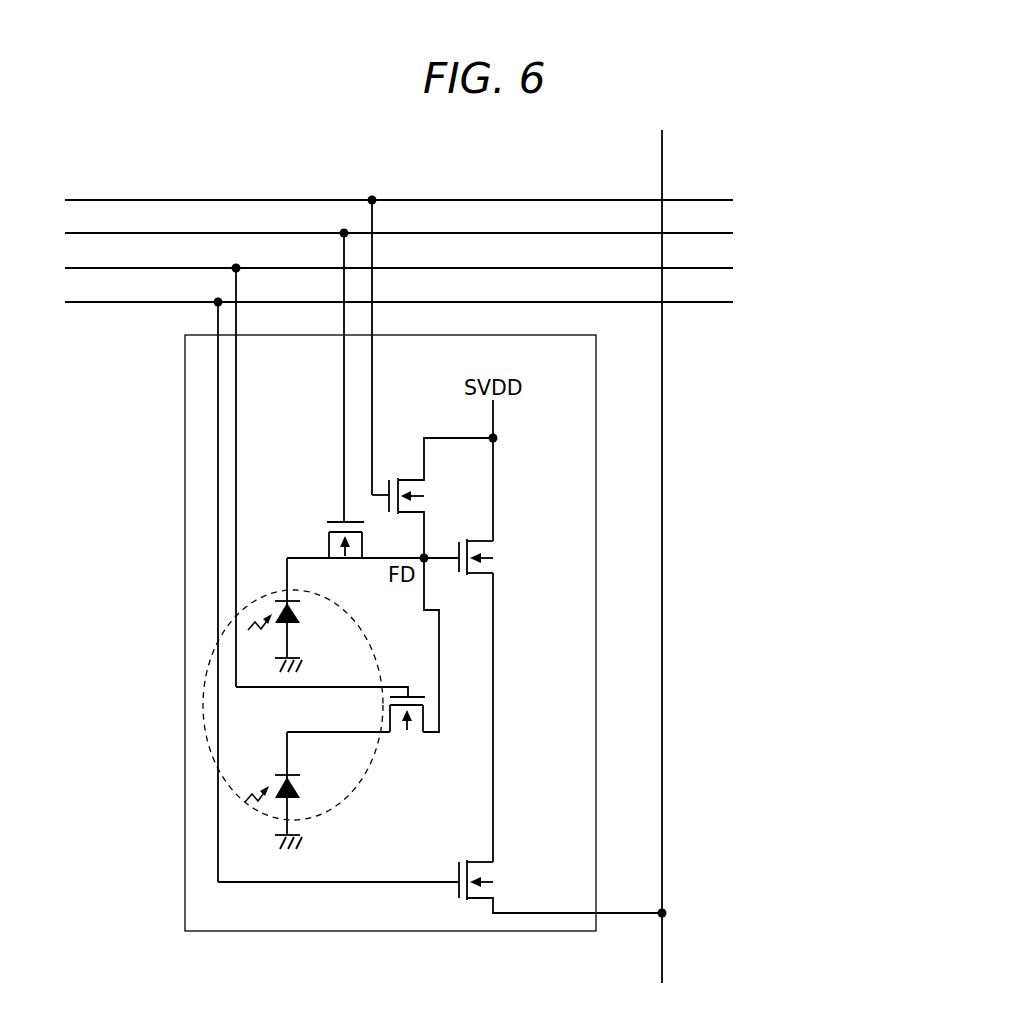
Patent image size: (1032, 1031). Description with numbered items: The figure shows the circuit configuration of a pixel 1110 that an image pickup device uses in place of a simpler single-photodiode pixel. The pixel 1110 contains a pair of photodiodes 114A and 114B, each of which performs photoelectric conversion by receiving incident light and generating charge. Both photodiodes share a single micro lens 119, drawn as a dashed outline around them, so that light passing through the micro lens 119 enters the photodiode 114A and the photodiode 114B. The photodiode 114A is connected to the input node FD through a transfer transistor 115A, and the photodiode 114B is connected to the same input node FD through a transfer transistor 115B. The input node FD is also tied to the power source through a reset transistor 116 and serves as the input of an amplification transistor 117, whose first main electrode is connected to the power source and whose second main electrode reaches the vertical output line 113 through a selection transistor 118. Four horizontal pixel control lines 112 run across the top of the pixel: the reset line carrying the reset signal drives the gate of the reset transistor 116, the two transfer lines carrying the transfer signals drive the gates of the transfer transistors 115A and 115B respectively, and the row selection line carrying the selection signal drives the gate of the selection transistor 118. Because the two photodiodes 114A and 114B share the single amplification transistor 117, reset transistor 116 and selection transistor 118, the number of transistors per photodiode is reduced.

The pixel control lines 112 is at (833, 182).
The vertical output line 113 is at (665, 807).
The pixel 1110 is at (185, 652).
The micro lens 119 is at (205, 710).
The photodiode 114A is at (297, 625).
The photodiode 114B is at (296, 789).
The transfer transistor 115A is at (332, 527).
The transfer transistor 115B is at (398, 733).
The reset transistor 116 is at (388, 478).
The amplification transistor 117 is at (488, 548).
The selection transistor 118 is at (488, 870).